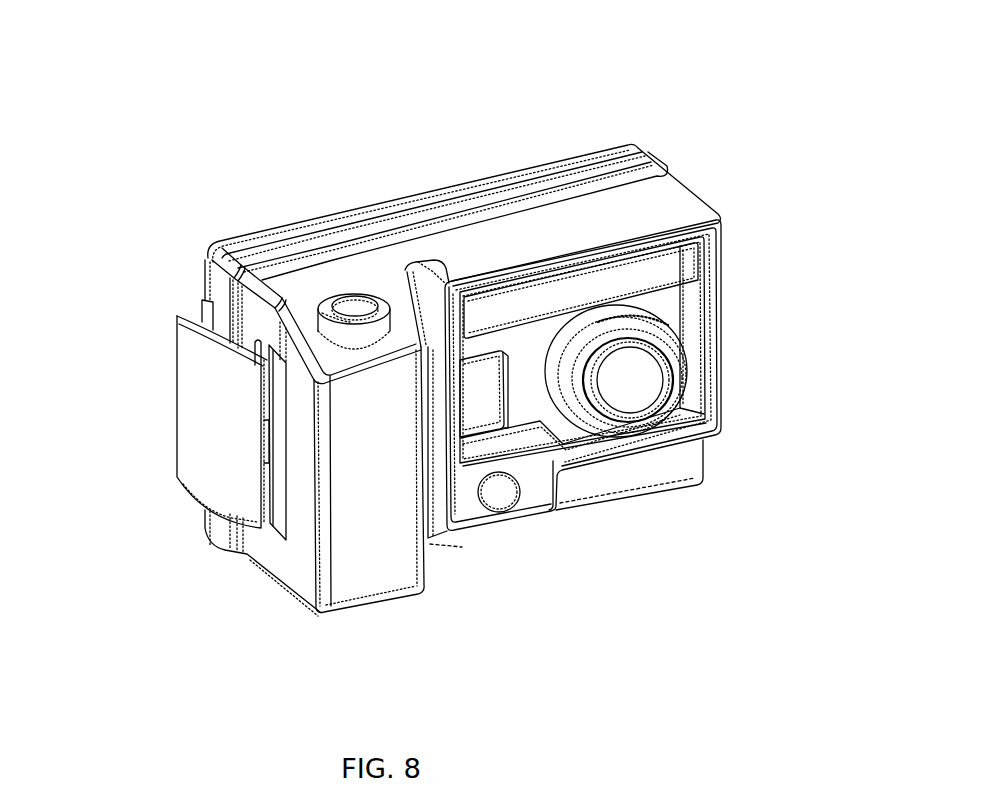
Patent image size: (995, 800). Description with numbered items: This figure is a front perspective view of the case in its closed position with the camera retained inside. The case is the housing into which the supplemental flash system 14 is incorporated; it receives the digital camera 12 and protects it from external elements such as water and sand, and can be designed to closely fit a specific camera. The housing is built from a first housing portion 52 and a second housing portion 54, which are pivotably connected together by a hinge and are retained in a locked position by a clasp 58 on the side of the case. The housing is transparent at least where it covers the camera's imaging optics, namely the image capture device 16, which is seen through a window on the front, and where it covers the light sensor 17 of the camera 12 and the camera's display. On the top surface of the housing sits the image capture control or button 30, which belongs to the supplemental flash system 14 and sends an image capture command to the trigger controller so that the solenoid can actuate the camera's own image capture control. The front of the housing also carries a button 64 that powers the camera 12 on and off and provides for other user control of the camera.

The digital camera 12 is at (527, 388).
The supplemental flash system 14 is at (256, 596).
The image capture device 16 is at (637, 378).
The light sensor 17 is at (479, 399).
The image capture control or button 30 is at (356, 303).
The first housing portion 52 is at (653, 203).
The second housing portion 54 is at (592, 172).
The clasp 58 is at (201, 444).
The button 64 is at (502, 498).